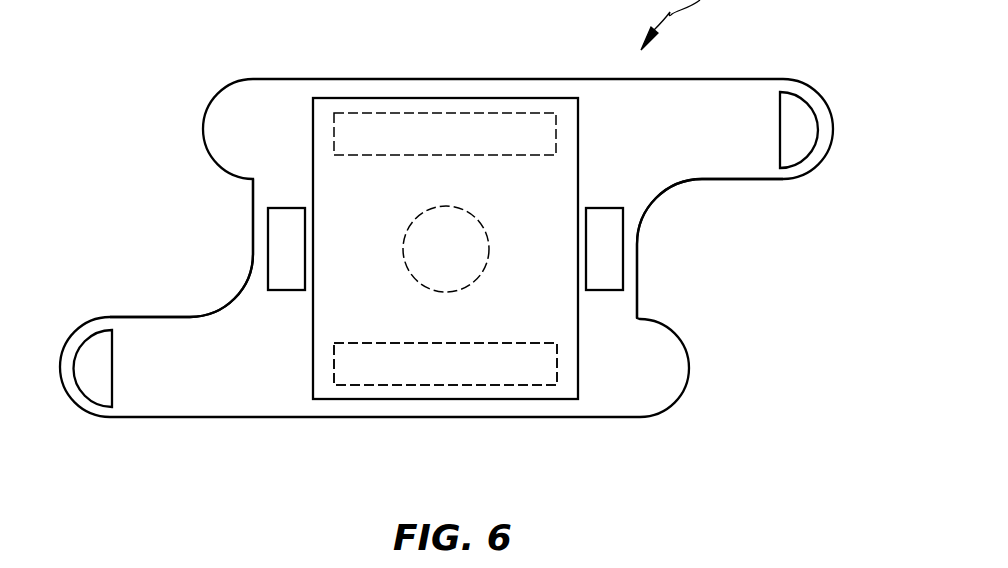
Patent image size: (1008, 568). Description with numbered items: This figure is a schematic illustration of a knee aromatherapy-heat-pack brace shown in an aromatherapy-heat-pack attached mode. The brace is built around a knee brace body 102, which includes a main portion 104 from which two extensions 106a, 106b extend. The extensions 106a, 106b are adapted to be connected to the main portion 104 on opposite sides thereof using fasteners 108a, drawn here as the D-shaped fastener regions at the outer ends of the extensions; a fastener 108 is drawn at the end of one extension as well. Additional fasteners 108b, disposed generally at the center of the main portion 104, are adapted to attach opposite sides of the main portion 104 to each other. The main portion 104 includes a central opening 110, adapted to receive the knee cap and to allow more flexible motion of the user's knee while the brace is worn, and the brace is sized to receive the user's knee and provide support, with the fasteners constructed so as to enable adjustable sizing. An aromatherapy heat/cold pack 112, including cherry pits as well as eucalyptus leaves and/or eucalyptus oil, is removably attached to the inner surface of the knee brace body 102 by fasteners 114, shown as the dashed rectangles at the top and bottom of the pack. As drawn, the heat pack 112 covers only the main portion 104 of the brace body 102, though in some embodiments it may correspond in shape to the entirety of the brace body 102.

The knee brace body 102 is at (710, 90).
The main portion 104 is at (623, 305).
The extension 106a is at (728, 167).
The extension 106b is at (173, 405).
The end opening 108 is at (803, 138).
The fasteners 108a is at (97, 350).
The additional fasteners 108b is at (278, 255).
The central opening 110 is at (404, 262).
The aromatherapy heat/cold pack 112 is at (509, 392).
The fasteners 114 is at (450, 133).